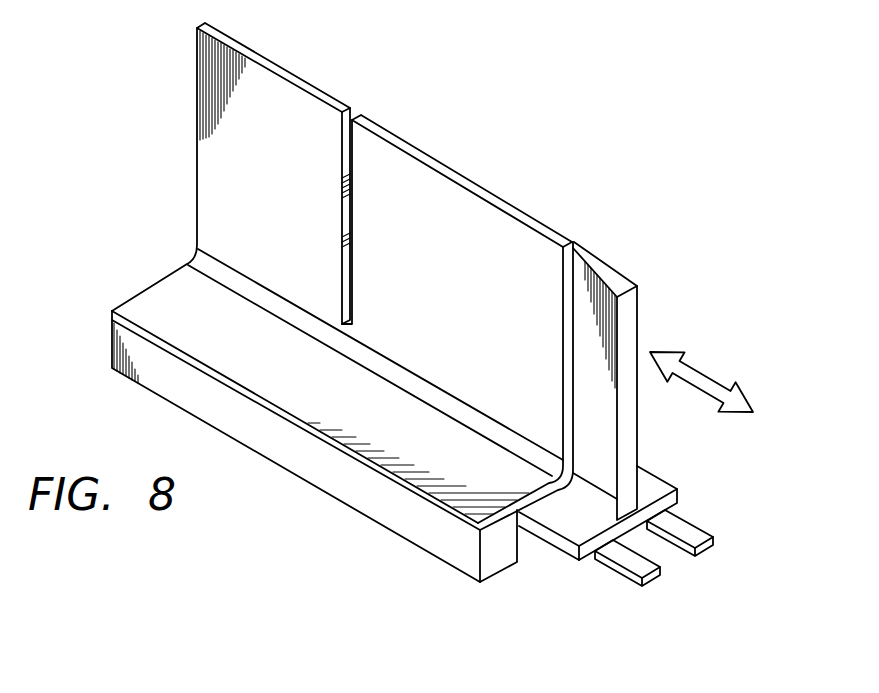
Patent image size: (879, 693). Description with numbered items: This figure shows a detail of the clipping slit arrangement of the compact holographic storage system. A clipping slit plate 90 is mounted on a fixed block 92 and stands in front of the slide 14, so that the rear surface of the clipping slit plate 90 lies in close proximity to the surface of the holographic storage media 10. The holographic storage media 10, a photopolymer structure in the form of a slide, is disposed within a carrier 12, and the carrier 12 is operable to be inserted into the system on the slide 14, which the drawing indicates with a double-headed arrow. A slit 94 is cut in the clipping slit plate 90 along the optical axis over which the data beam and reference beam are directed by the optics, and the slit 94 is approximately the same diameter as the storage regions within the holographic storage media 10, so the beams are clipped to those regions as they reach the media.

The holographic storage media 10 is at (619, 285).
The carrier 12 is at (656, 496).
The slide 14 is at (658, 577).
The clipping slit plate 90 is at (291, 98).
The fixed block 92 is at (492, 565).
The slit 94 is at (345, 157).